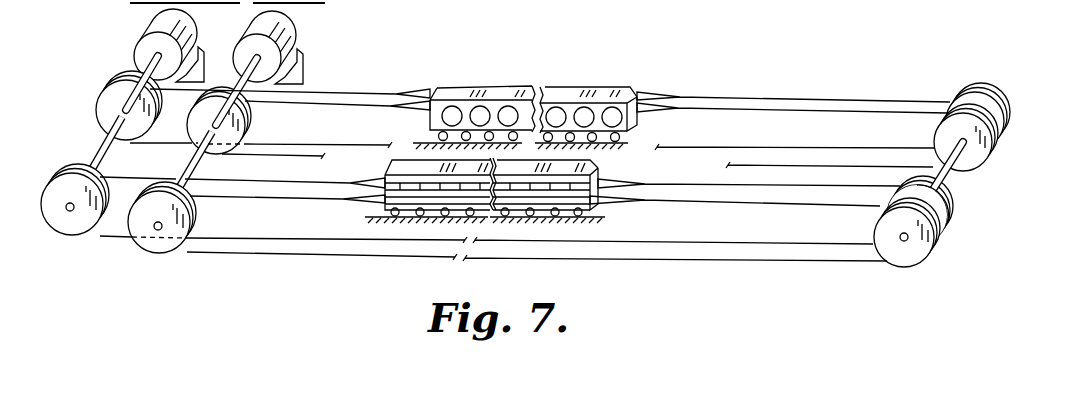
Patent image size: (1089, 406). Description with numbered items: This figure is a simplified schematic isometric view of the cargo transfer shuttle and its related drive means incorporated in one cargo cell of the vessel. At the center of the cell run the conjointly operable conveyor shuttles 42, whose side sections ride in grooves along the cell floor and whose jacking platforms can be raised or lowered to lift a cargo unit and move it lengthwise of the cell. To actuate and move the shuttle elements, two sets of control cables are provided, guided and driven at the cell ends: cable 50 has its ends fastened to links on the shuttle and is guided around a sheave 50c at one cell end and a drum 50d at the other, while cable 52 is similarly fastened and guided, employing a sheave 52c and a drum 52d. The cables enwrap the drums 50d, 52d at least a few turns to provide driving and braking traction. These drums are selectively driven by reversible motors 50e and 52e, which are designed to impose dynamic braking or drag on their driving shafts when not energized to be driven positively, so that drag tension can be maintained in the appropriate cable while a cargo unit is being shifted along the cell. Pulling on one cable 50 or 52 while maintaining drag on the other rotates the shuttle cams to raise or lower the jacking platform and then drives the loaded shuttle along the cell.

The conveyor shuttle 42 is at (652, 78).
The drive cable 50 is at (291, 143).
The drive cable 52 is at (313, 155).
The sheave 50c is at (1005, 127).
The sheave 52c is at (985, 165).
The drum 50d is at (106, 106).
The drum 52d is at (218, 155).
The reversible motor 50e is at (148, 33).
The reversible motor 52e is at (298, 27).